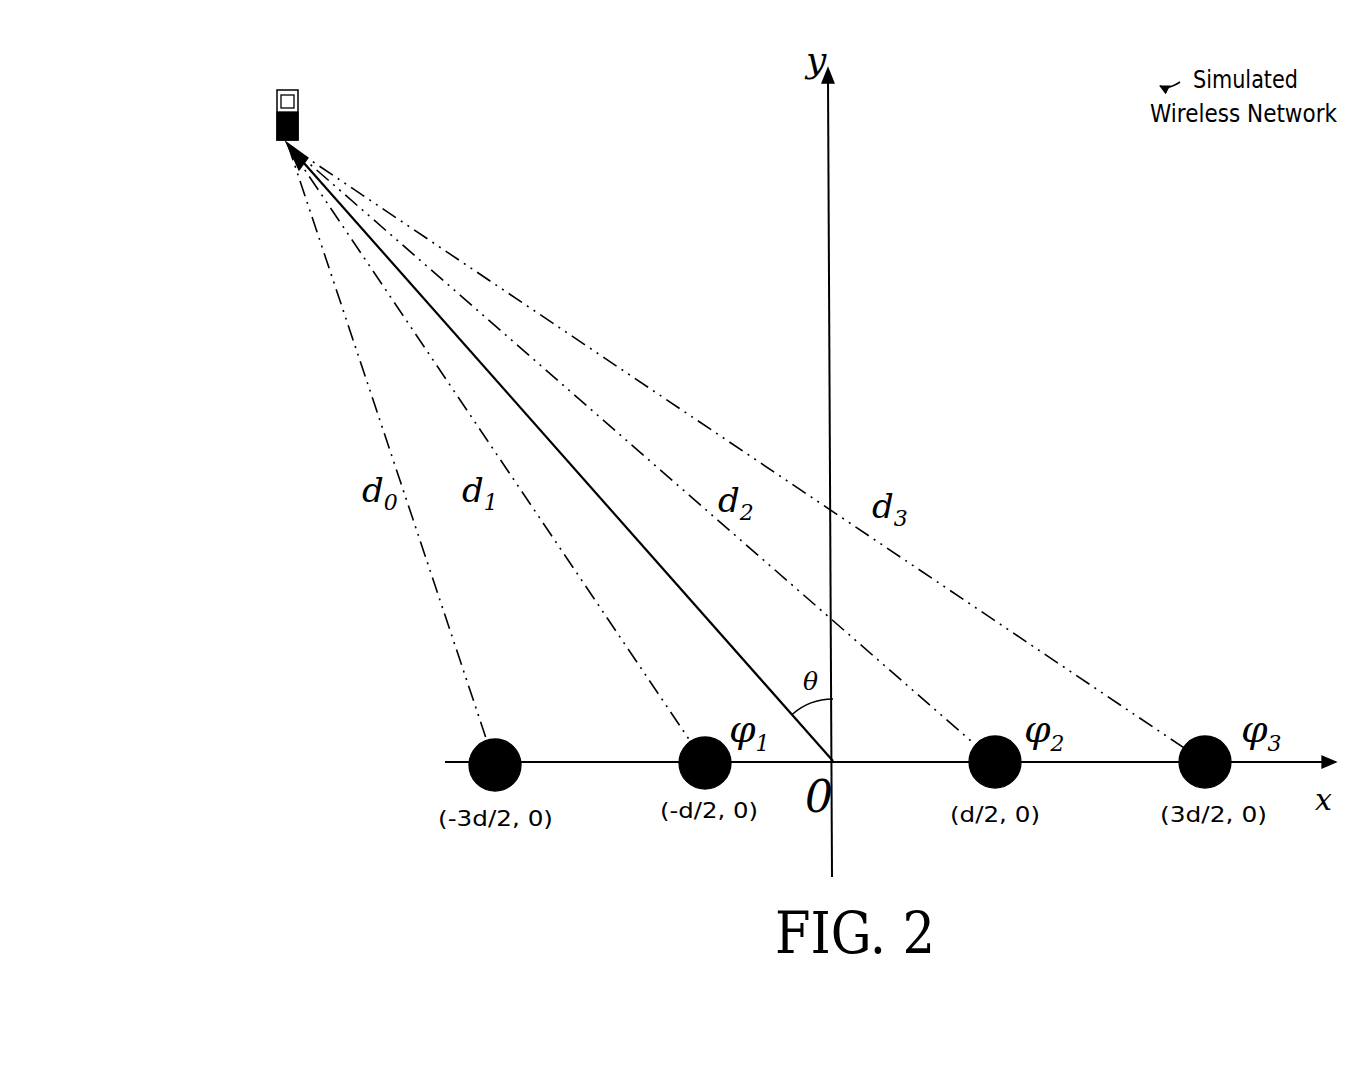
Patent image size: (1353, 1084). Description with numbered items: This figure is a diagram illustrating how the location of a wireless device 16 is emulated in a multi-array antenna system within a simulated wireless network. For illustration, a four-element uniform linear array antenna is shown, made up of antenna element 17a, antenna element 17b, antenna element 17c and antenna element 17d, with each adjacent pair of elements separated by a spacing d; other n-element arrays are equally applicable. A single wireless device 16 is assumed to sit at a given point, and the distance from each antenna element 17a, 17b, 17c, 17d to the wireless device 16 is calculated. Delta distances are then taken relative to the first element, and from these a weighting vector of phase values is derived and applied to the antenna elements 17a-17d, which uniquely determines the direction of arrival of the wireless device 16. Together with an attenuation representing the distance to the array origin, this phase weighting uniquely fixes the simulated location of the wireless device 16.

The wireless device 16 is at (273, 112).
The antenna element 17a is at (530, 776).
The antenna element 17b is at (738, 773).
The antenna element 17c is at (1028, 773).
The antenna element 17d is at (1242, 772).